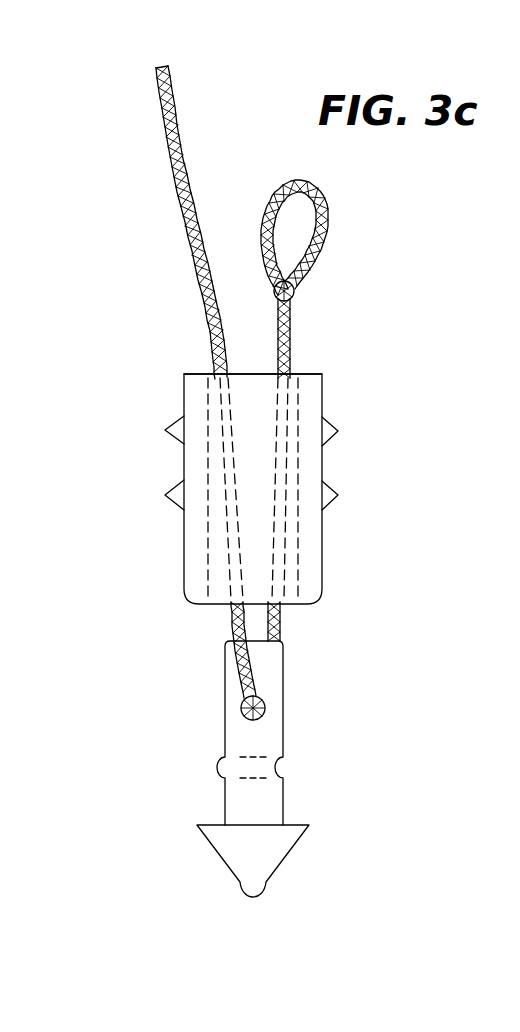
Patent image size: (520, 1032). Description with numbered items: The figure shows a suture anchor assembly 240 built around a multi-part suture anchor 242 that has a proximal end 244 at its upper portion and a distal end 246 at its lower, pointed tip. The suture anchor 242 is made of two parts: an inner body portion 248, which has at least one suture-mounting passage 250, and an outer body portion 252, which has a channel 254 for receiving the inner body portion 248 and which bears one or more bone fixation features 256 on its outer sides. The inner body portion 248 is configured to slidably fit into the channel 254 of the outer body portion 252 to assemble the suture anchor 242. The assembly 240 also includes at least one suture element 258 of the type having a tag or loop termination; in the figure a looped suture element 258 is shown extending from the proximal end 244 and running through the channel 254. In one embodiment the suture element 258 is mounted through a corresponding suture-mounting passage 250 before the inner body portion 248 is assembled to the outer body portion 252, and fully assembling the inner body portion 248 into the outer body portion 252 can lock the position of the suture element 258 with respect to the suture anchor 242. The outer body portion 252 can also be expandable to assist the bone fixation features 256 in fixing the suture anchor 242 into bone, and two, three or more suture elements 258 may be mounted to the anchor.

The suture anchor assembly 240 is at (254, 138).
The suture anchor 242 is at (340, 590).
The proximal end 244 is at (324, 366).
The distal end 246 is at (298, 879).
The inner body portion 248 is at (283, 703).
The suture-mounting passage 250 is at (248, 720).
The outer body portion 252 is at (316, 469).
The channel 254 is at (310, 397).
The bone fixation features 256 is at (338, 434).
The suture element 258 is at (182, 157).